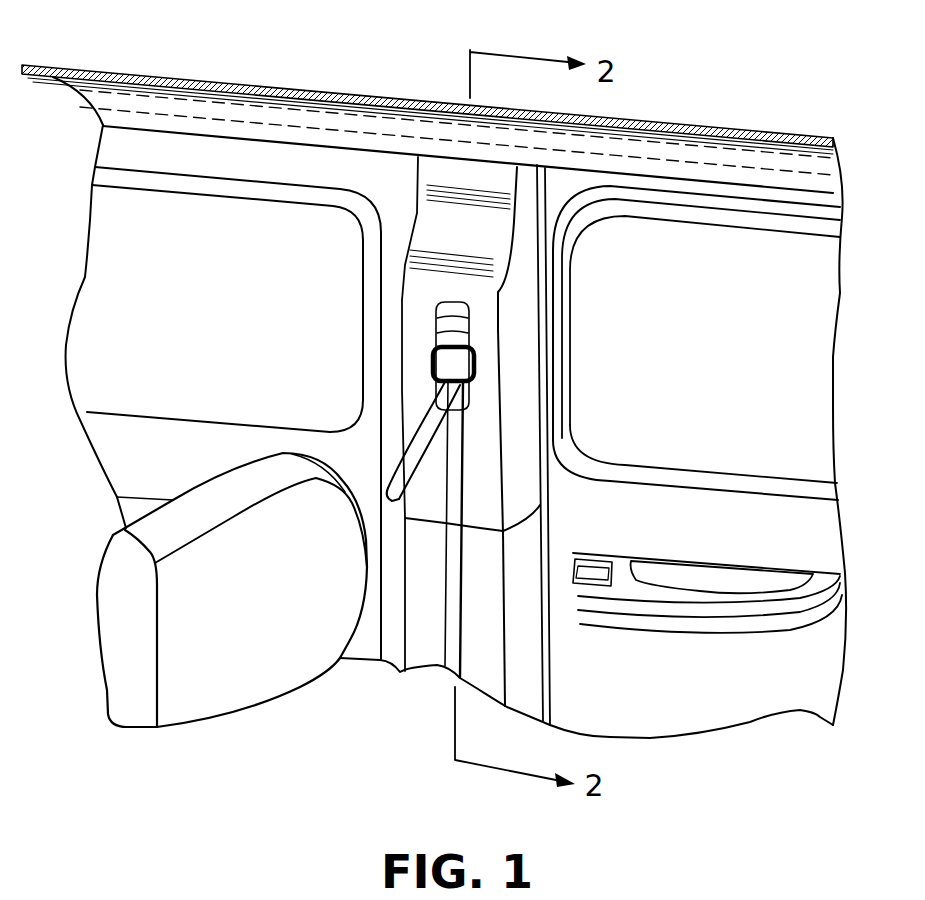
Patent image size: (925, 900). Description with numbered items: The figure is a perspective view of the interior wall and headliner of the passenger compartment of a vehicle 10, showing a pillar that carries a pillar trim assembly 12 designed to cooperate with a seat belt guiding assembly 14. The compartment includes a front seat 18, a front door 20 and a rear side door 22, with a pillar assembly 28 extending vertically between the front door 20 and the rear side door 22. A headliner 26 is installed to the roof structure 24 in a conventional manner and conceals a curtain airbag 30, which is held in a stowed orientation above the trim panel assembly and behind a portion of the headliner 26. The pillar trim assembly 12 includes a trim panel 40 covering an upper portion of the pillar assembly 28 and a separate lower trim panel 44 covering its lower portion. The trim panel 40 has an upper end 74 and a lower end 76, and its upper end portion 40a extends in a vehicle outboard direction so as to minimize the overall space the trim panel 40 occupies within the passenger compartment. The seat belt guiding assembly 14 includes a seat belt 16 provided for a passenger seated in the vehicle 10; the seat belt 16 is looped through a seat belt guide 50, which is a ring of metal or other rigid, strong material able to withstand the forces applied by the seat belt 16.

The vehicle 10 is at (343, 42).
The pillar trim assembly 12 is at (532, 323).
The seat belt guiding assembly 14 is at (458, 357).
The seat belt 16 is at (456, 503).
The front seat 18 is at (232, 484).
The front door 20 is at (103, 240).
The rear side door 22 is at (822, 365).
The roof structure 24 is at (62, 66).
The headliner 26 is at (72, 92).
The pillar assembly 28 is at (548, 194).
The curtain airbag 30 is at (286, 128).
The trim panel 40 is at (412, 303).
The upper end portion 40a is at (423, 207).
The lower trim panel 44 is at (488, 618).
The seat belt guide 50 is at (442, 352).
The upper end 74 is at (465, 158).
The lower end 76 is at (483, 532).